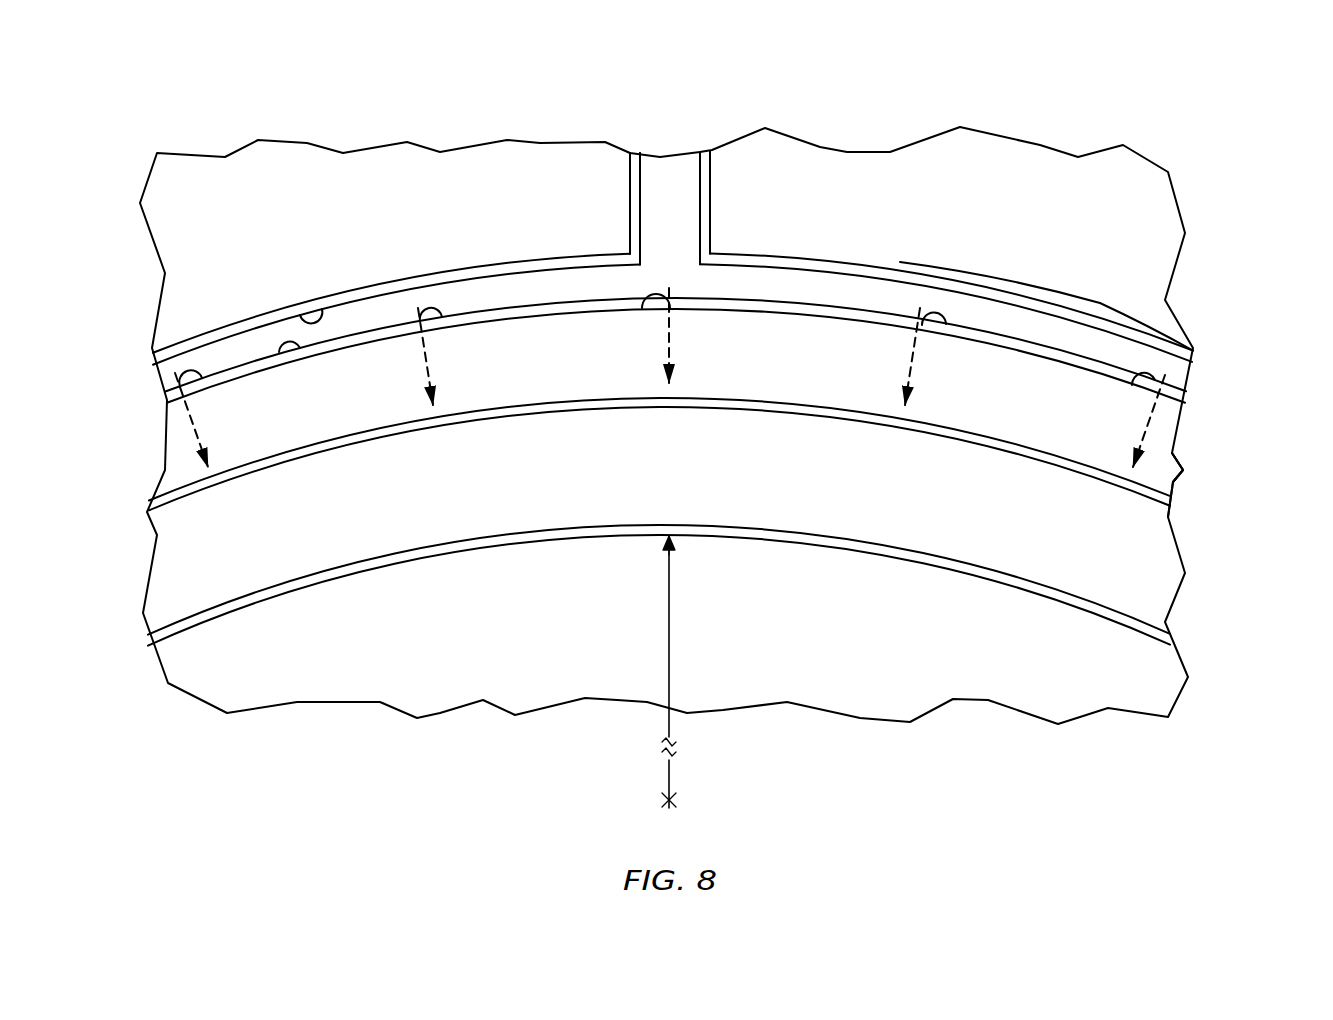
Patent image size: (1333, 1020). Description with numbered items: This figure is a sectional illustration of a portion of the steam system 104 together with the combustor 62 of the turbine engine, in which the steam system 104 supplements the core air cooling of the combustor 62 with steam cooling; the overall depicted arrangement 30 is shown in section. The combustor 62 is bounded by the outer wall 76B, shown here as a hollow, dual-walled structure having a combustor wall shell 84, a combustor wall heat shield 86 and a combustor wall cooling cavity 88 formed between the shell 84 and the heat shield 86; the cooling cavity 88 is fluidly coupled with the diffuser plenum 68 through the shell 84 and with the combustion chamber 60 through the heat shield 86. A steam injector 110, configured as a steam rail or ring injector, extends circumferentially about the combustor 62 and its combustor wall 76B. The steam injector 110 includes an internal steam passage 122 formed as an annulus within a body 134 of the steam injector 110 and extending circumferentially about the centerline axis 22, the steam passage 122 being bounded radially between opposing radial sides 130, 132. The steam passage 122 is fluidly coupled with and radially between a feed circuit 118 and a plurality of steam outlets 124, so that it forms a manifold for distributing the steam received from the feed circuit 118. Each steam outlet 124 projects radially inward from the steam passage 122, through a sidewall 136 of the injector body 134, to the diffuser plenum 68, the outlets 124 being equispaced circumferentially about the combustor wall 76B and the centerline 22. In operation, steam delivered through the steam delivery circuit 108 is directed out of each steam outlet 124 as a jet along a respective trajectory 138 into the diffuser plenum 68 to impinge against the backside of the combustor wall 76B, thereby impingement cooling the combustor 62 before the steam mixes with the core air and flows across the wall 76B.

The gas turbine engine component 30 is at (1201, 105).
The steam system 104 is at (714, 118).
The steam delivery circuit 108 is at (611, 183).
The feed circuit 118 is at (626, 178).
The steam passage 122 is at (742, 282).
The steam injector body 134 is at (1022, 287).
The steam injector 110 is at (1163, 331).
The sidewall 136 is at (540, 305).
The radial side 132 is at (318, 302).
The radial side 130 is at (279, 352).
The steam outlets 124 is at (1097, 408).
The trajectory 138 is at (1222, 410).
The diffuser plenum 68 is at (906, 243).
The combustor wall cooling cavities 88 is at (676, 485).
The combustion chamber 60 is at (796, 643).
The combustor wall shell 84 is at (1168, 498).
The combustor wall heat shield 86 is at (1170, 636).
The combustor 62 is at (1155, 478).
The outer wall 76B is at (1241, 463).
The centerline axis 22 is at (677, 800).